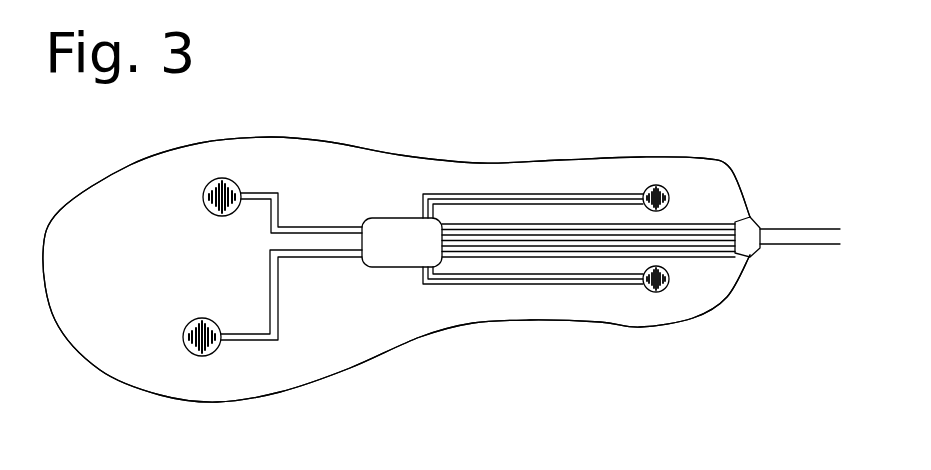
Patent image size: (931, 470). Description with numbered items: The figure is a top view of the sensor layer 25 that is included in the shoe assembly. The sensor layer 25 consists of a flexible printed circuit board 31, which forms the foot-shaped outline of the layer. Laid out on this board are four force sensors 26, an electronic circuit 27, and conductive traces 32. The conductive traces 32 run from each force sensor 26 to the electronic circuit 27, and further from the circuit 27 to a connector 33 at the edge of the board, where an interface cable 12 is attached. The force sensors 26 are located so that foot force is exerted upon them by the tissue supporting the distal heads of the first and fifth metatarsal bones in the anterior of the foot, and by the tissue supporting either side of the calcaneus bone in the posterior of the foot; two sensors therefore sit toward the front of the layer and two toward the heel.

The interface cable 12 is at (785, 228).
The sensor layer 25 is at (560, 110).
The force sensors 26 is at (177, 320).
The electronic circuit 27 is at (398, 240).
The flexible printed circuit board 31 is at (102, 328).
The conductive traces 32 is at (283, 213).
The connector 33 is at (747, 240).